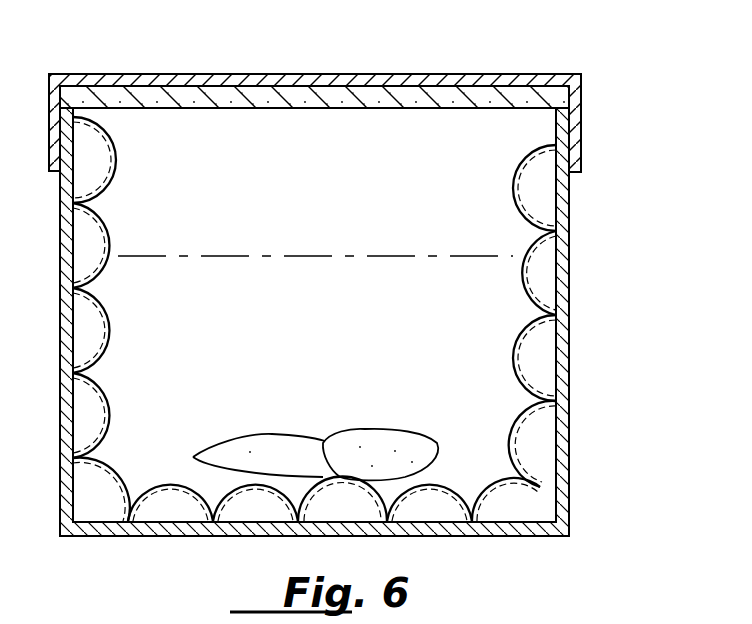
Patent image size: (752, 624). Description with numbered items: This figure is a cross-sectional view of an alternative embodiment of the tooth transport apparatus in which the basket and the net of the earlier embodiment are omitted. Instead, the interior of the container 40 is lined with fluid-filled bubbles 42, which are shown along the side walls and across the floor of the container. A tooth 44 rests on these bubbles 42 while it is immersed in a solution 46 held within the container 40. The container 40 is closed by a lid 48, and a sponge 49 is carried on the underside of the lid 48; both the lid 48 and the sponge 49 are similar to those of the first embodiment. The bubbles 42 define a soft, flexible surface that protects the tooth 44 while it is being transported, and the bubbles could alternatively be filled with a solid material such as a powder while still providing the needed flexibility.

The container 40 is at (567, 420).
The fluid-filled bubbles 42 is at (95, 247).
The tooth 44 is at (298, 453).
The solution 46 is at (260, 290).
The lid 48 is at (333, 82).
The sponge 49 is at (412, 103).